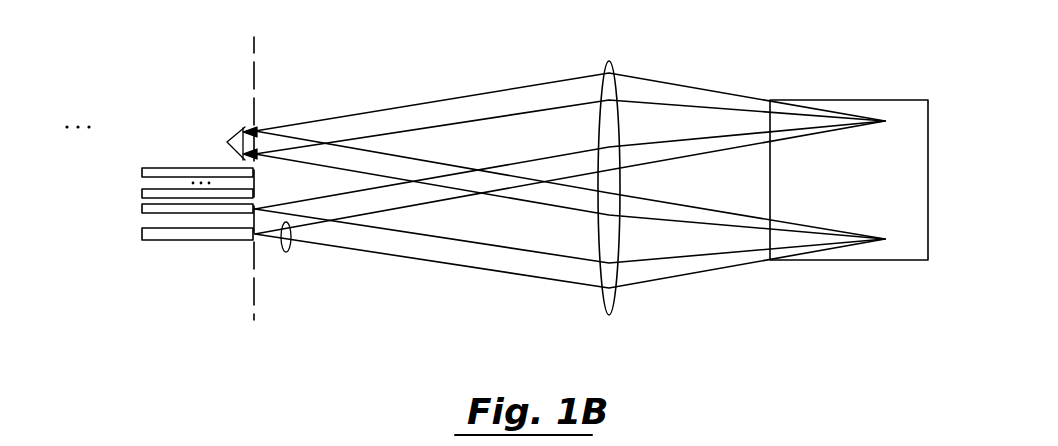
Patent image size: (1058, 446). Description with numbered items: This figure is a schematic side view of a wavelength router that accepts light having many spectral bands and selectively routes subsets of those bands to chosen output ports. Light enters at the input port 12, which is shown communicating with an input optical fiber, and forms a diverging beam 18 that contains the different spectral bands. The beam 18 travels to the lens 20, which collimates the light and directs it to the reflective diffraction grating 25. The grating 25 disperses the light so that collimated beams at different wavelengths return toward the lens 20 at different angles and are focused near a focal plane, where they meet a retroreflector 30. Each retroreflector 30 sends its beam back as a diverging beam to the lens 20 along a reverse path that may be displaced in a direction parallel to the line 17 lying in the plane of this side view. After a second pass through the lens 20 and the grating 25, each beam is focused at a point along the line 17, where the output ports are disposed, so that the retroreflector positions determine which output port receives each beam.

The input port 12 is at (258, 237).
The line 17 is at (254, 313).
The diverging beam 18 is at (288, 252).
The lens 20 is at (610, 316).
The reflective diffraction grating 25 is at (875, 100).
The retroreflector 30 is at (241, 134).